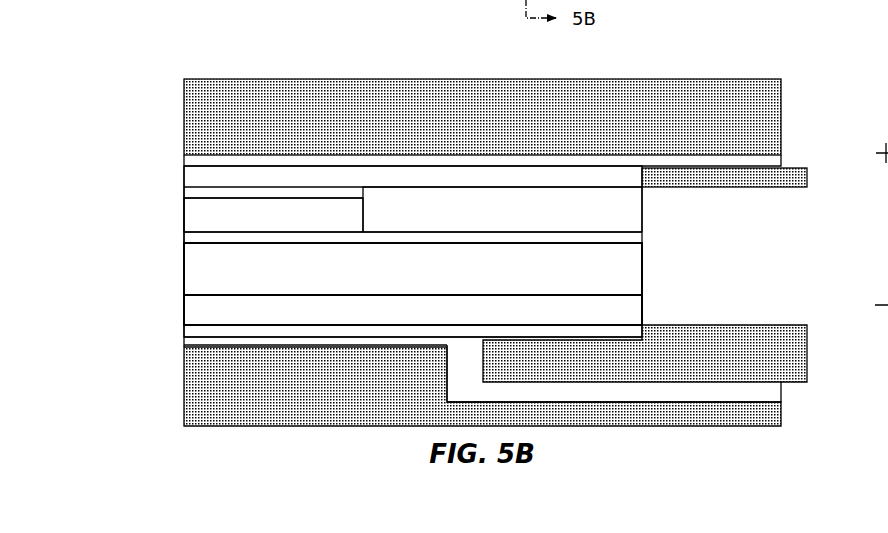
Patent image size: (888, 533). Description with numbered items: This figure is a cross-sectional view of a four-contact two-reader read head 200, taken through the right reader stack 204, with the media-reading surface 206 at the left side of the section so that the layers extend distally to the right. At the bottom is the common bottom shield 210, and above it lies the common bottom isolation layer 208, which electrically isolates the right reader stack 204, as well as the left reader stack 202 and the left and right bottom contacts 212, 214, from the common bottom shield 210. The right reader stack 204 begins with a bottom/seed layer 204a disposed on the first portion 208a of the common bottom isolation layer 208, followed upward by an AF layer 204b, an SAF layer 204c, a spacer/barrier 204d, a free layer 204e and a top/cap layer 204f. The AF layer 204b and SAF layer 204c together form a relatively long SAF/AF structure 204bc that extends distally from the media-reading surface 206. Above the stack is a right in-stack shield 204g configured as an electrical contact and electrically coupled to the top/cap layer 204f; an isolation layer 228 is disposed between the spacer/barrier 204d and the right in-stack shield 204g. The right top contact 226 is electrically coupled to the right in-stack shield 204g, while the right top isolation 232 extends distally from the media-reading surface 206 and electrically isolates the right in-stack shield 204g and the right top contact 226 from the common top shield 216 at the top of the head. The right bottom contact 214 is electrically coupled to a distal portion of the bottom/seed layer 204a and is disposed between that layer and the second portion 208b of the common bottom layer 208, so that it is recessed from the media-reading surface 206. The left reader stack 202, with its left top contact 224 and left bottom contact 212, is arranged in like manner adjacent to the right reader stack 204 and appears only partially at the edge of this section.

The read head 200 is at (196, 70).
The common top shield 216 is at (405, 131).
The right top isolation 232 is at (200, 161).
The right reader stack 204 is at (166, 166).
The right in-stack shield 204g is at (197, 177).
The top/cap layer 204f is at (197, 192).
The free layer 204e is at (311, 226).
The spacer/barrier 204d is at (197, 239).
The SAF layer 204c is at (275, 279).
The AF layer 204b is at (272, 320).
The SAF/AF structure 204bc is at (653, 243).
The bottom/seed layer 204a is at (197, 333).
The isolation layer 228 is at (473, 221).
The right top contact 226 is at (700, 190).
The first portion of the common bottom isolation layer 208a is at (197, 343).
The common bottom isolation layer 208 is at (448, 392).
The second portion of the common bottom layer 208b is at (762, 392).
The right bottom contact 214 is at (663, 361).
The common bottom shield 210 is at (281, 399).
The media-reading surface 206 is at (170, 366).
The left top contact 224 is at (887, 176).
The left reader stack 202 is at (876, 238).
The left bottom contact 212 is at (887, 290).